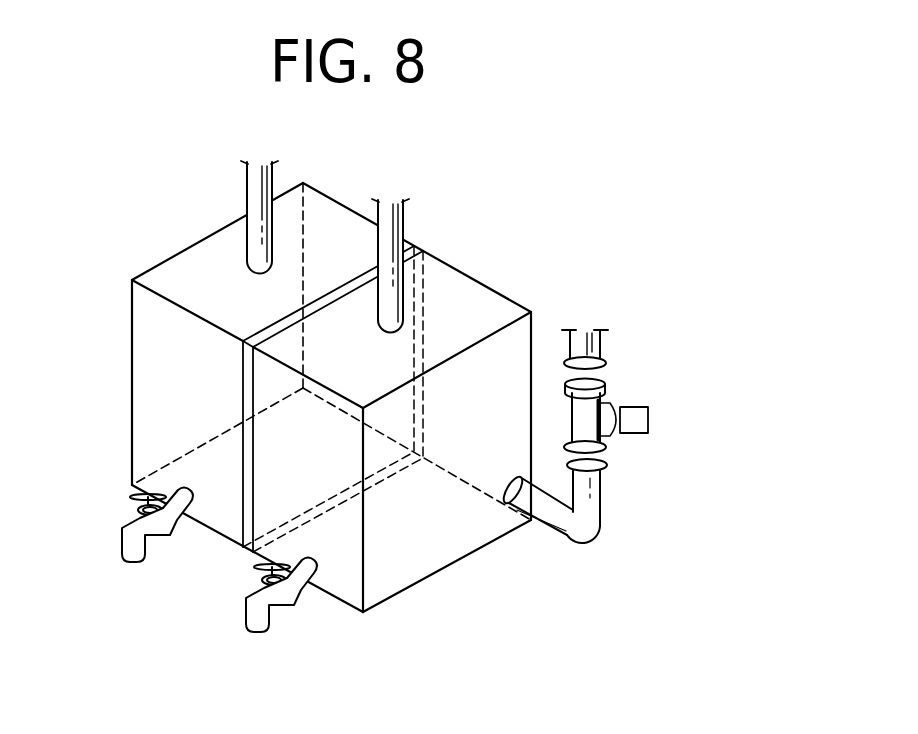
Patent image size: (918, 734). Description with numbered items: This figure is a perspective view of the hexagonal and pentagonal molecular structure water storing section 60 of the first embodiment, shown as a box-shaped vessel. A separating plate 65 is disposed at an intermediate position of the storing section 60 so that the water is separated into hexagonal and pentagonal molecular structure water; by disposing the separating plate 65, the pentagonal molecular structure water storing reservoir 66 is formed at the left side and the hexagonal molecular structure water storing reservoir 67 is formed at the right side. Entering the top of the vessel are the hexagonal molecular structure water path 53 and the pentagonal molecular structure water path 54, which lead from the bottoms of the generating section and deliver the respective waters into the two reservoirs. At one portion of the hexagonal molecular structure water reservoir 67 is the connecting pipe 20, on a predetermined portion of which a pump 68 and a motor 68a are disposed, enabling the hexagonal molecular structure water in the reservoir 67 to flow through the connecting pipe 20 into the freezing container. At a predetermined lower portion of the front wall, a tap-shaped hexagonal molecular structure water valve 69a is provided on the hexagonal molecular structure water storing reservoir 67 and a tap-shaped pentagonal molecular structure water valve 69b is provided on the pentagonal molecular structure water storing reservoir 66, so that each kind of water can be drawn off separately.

The connecting pipe 20 is at (587, 357).
The hexagonal molecular structure water path 53 is at (400, 222).
The pentagonal molecular structure water path 54 is at (256, 203).
The hexagonal and pentagonal molecular structure water storing section 60 is at (338, 421).
The separating plate 65 is at (287, 315).
The pentagonal molecular structure water storing reservoir 66 is at (155, 390).
The hexagonal molecular structure water storing reservoir 67 is at (445, 562).
The pump 68 is at (590, 418).
The motor 68a is at (647, 420).
The tap-shaped hexagonal molecular structure water valve 69a is at (262, 632).
The tap-shaped pentagonal molecular structure water valve 69b is at (130, 542).